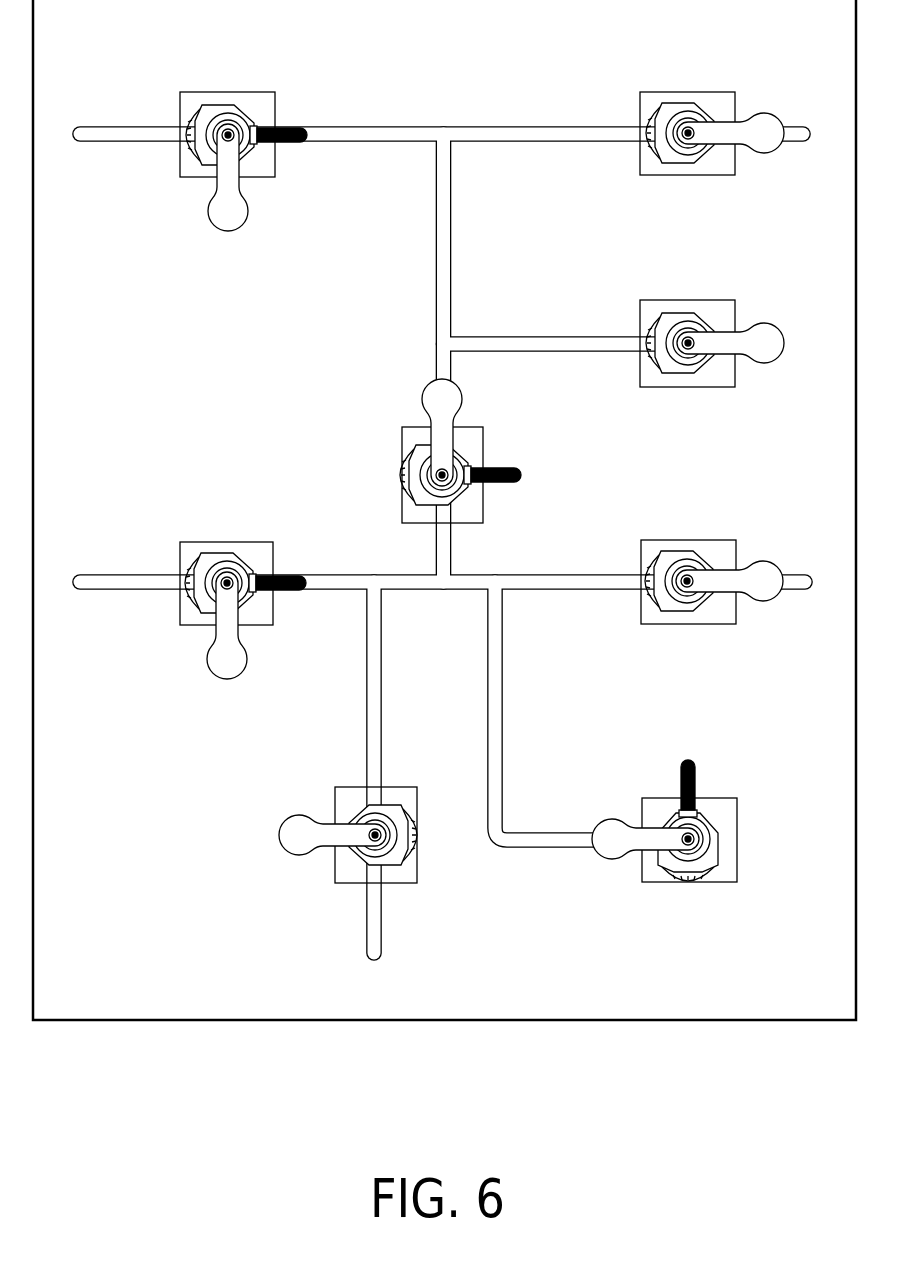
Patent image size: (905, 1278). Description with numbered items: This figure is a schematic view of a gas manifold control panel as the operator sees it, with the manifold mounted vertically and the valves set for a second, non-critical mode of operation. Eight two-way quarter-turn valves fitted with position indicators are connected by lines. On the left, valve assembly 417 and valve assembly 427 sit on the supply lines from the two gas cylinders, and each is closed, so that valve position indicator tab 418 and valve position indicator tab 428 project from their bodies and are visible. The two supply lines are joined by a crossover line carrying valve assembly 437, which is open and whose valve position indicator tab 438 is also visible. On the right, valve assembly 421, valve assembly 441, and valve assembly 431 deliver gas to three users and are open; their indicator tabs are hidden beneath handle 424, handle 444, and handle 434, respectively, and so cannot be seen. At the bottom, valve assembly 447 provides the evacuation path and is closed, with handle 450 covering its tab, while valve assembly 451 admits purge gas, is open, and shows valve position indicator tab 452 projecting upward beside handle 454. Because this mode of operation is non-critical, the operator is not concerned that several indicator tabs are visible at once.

The valve assembly 417 is at (276, 111).
The valve position indicator tab 418 is at (298, 148).
The valve assembly 421 is at (640, 113).
The handle 424 is at (780, 155).
The valve assembly 427 is at (226, 542).
The valve position indicator tab 428 is at (288, 593).
The valve assembly 431 is at (641, 558).
The handle 434 is at (775, 601).
The valve assembly 437 is at (405, 438).
The valve position indicator tab 438 is at (498, 467).
The valve assembly 441 is at (640, 318).
The handle 444 is at (780, 364).
The valve assembly 447 is at (335, 803).
The handle 450 is at (305, 856).
The valve assembly 451 is at (642, 813).
The valve position indicator tab 452 is at (700, 786).
The handle 454 is at (606, 861).